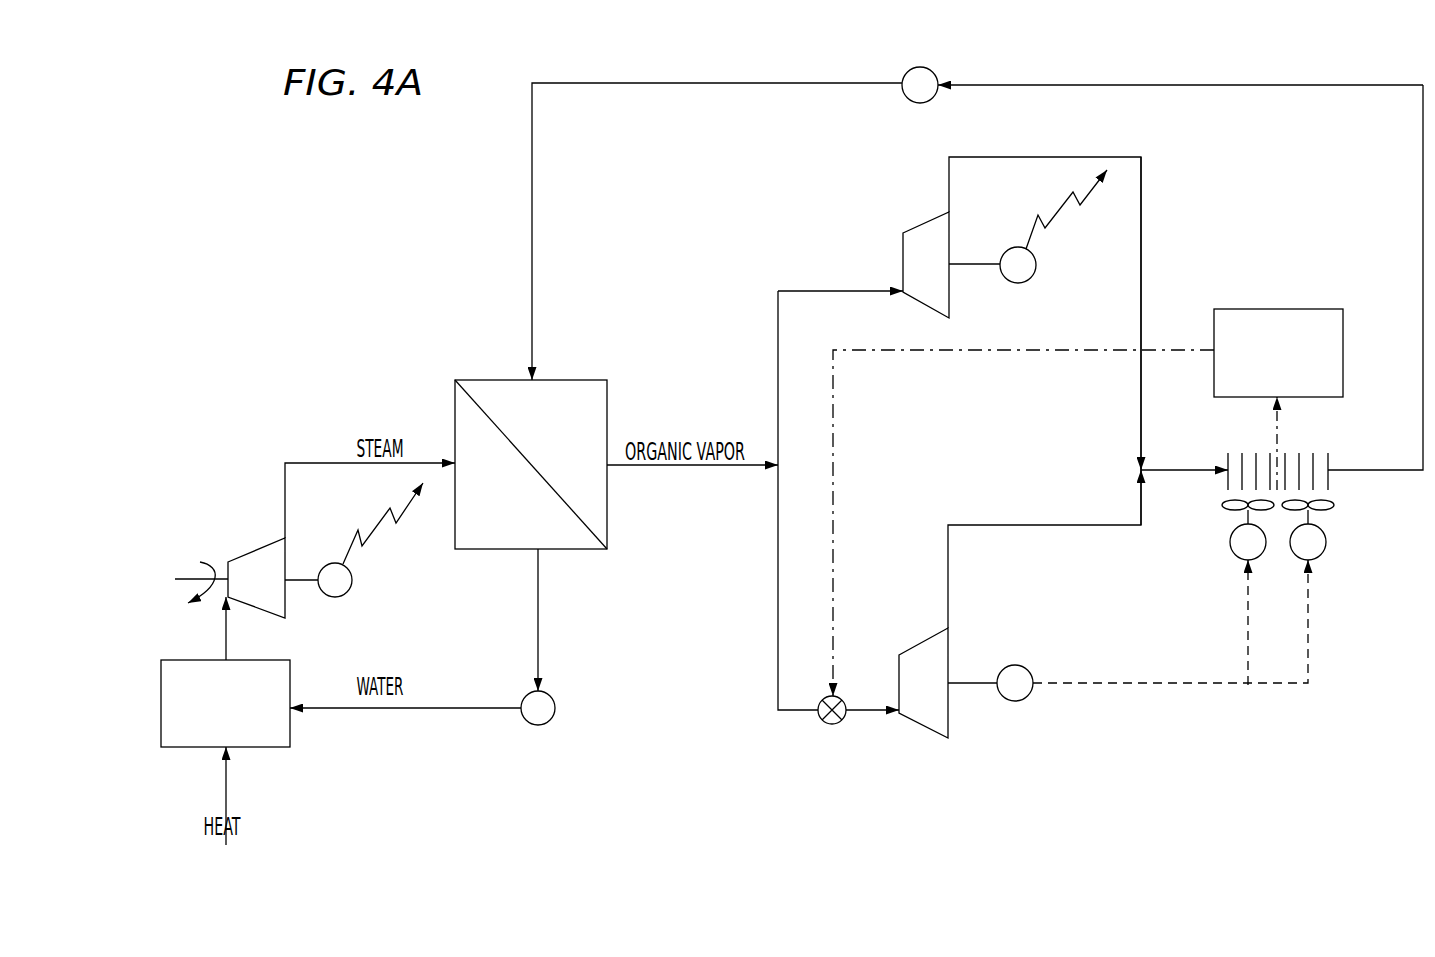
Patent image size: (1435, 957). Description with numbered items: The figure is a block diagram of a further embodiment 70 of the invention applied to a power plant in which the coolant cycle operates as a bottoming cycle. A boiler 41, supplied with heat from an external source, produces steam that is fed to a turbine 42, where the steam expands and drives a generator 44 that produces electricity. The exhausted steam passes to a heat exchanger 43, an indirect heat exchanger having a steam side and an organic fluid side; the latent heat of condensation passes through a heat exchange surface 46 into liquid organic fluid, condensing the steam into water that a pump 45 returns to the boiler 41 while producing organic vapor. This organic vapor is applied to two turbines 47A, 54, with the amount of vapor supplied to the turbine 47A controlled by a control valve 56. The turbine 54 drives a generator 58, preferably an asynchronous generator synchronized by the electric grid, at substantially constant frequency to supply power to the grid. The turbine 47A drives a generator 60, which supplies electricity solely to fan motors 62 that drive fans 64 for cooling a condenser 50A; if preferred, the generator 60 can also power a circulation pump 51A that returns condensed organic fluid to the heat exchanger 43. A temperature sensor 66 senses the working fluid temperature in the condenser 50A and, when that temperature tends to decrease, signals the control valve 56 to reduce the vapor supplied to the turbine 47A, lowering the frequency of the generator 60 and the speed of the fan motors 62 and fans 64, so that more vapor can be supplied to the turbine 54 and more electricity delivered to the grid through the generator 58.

The further embodiment 70 is at (392, 303).
The boiler 41 is at (292, 746).
The turbine 42 is at (252, 547).
The heat exchanger 43 is at (488, 380).
The generator 44 is at (340, 597).
The pump 45 is at (550, 697).
The heat exchange surface 46 is at (522, 456).
The turbine 47A is at (948, 725).
The condenser 50A is at (1322, 456).
The circulation pump 51A is at (935, 71).
The turbine 54 is at (905, 235).
The control valve 56 is at (838, 724).
The generator 58 is at (1031, 279).
The generator 60 is at (1028, 670).
The fan motors 62 is at (1300, 560).
The fans 64 is at (1334, 505).
The temperature sensor 66 is at (1280, 309).